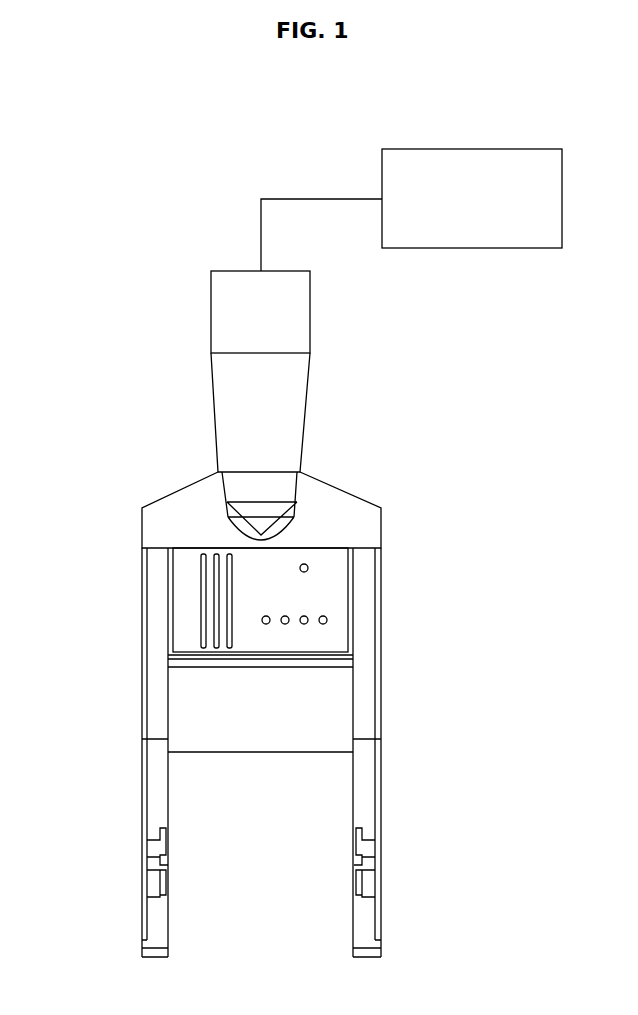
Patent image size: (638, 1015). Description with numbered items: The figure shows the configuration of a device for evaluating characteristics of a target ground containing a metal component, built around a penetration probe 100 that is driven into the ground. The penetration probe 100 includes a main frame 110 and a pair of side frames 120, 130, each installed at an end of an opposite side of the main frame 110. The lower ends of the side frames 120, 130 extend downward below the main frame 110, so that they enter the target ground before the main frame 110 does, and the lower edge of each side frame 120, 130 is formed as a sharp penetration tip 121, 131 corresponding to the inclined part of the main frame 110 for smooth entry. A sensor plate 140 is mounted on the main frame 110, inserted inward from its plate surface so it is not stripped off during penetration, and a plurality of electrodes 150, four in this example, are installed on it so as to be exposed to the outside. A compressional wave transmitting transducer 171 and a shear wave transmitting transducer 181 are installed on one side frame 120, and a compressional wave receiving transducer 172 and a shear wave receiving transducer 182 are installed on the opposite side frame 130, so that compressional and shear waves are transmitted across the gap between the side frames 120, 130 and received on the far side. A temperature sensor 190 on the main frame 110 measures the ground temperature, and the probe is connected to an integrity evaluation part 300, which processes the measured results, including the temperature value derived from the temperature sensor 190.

The penetration probe 100 is at (364, 420).
The main frame 110 is at (343, 503).
The side frame 120 is at (153, 677).
The penetration tip 121 is at (156, 955).
The side frame 130 is at (367, 678).
The penetration tip 131 is at (363, 955).
The sensor plate 140 is at (337, 596).
The electrodes 150 is at (266, 624).
The compressional wave transmitting transducer 171 is at (202, 608).
The compressional wave receiving transducer 172 is at (370, 842).
The shear wave transmitting transducer 181 is at (160, 882).
The shear wave receiving transducer 182 is at (362, 882).
The temperature sensor 190 is at (308, 567).
The integrity evaluation part 300 is at (470, 148).